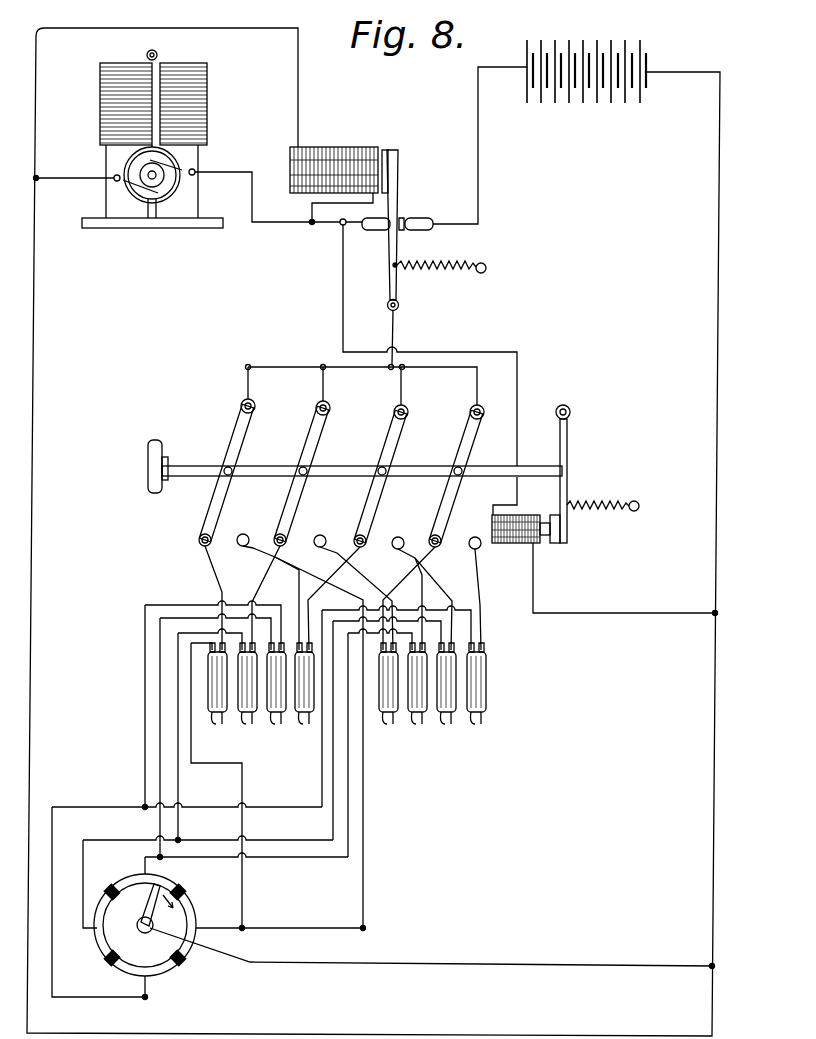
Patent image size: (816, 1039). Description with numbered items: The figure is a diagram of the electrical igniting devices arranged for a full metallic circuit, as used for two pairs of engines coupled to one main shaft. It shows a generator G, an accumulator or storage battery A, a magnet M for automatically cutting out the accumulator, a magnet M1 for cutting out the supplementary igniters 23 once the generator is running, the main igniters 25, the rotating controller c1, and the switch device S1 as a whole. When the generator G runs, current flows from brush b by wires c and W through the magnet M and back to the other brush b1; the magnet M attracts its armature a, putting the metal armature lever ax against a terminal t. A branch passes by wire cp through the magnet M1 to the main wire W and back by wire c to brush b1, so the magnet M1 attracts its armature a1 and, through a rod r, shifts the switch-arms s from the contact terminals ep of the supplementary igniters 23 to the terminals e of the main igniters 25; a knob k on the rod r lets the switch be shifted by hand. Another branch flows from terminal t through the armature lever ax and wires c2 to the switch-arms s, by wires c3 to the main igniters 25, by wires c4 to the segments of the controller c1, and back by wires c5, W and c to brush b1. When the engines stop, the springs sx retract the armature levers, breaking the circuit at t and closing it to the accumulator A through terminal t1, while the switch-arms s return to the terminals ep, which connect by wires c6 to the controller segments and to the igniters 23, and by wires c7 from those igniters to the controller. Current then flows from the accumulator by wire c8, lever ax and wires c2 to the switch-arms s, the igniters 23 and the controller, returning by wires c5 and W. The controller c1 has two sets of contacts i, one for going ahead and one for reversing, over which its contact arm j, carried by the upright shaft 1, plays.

The main wire W is at (170, 6).
The generator G is at (100, 108).
The brush b is at (180, 168).
The brush b1 is at (138, 188).
The wire c is at (88, 178).
The magnet M is at (339, 156).
The armature a is at (400, 148).
The terminal t is at (372, 232).
The terminal t1 is at (418, 232).
The spring sx is at (516, 386).
The wire c8 is at (480, 165).
The accumulator A is at (600, 26).
The armature lever ax is at (405, 208).
The wire cp is at (343, 292).
The wires c2 is at (396, 328).
The switch-arms s is at (228, 444).
The switch device S1 is at (370, 400).
The rod r is at (362, 463).
The knob k is at (147, 464).
The terminals e is at (200, 546).
The contact terminals ep is at (358, 529).
The wires c3 is at (282, 598).
The wires c5 is at (480, 964).
The wires c6 is at (408, 598).
The wires c4 is at (240, 764).
The wires c7 is at (322, 760).
The main igniters 25 is at (261, 696).
The supplementary igniters 23 is at (456, 714).
The magnet M1 is at (521, 543).
The armature a1 is at (560, 545).
The rotating controller c1 is at (124, 902).
The contacts i is at (178, 984).
The contact arm j is at (145, 905).
The upright shaft 1 is at (137, 927).